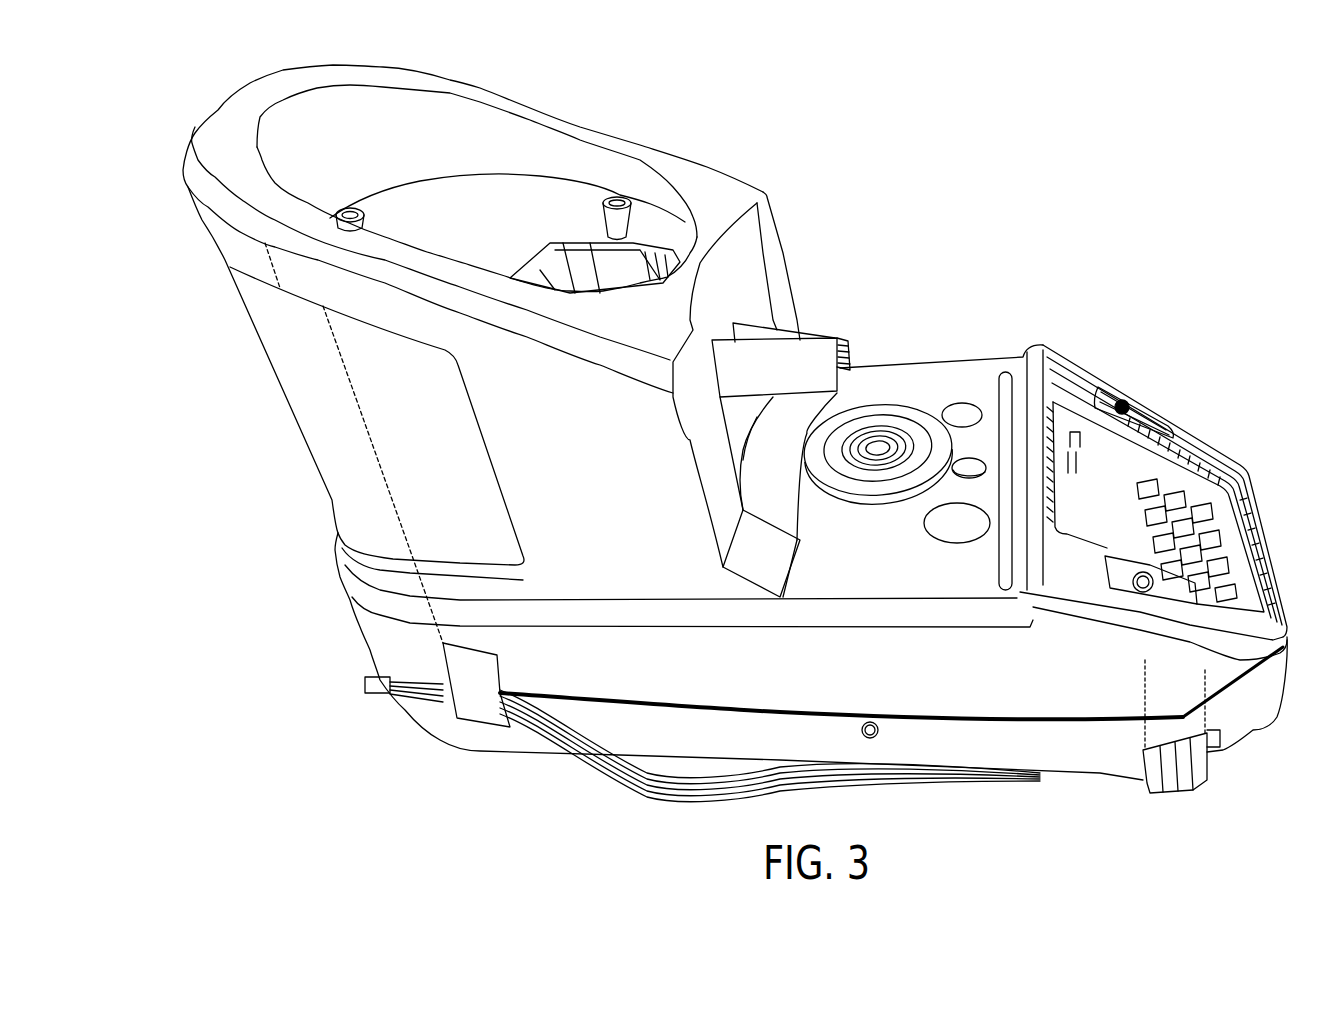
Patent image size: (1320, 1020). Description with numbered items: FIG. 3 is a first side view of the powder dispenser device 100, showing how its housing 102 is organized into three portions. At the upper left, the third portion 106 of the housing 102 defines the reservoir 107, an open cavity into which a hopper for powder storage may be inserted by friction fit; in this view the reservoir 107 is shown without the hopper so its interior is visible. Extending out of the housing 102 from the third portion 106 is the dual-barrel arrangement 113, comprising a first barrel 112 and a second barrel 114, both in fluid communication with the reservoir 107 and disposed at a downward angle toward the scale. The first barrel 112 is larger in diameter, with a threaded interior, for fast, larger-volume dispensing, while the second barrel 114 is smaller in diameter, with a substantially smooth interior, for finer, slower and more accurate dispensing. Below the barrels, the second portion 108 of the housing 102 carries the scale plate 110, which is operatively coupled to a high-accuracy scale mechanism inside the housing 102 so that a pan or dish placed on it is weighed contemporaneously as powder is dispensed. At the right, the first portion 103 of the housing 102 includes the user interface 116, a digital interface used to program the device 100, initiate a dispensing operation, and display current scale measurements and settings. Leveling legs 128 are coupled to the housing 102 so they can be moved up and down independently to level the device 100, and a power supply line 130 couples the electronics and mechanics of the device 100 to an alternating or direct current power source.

The powder dispenser device 100 is at (146, 118).
The housing 102 is at (963, 360).
The first portion 103 is at (1116, 342).
The third portion 106 is at (649, 560).
The reservoir 107 is at (425, 199).
The second portion 108 is at (926, 803).
The scale plate 110 is at (873, 500).
The first barrel 112 is at (757, 380).
The dual-barrel arrangement 113 is at (810, 290).
The second barrel 114 is at (836, 338).
The user interface 116 is at (1207, 422).
The leveling legs 128 is at (1170, 793).
The power supply line 130 is at (590, 778).